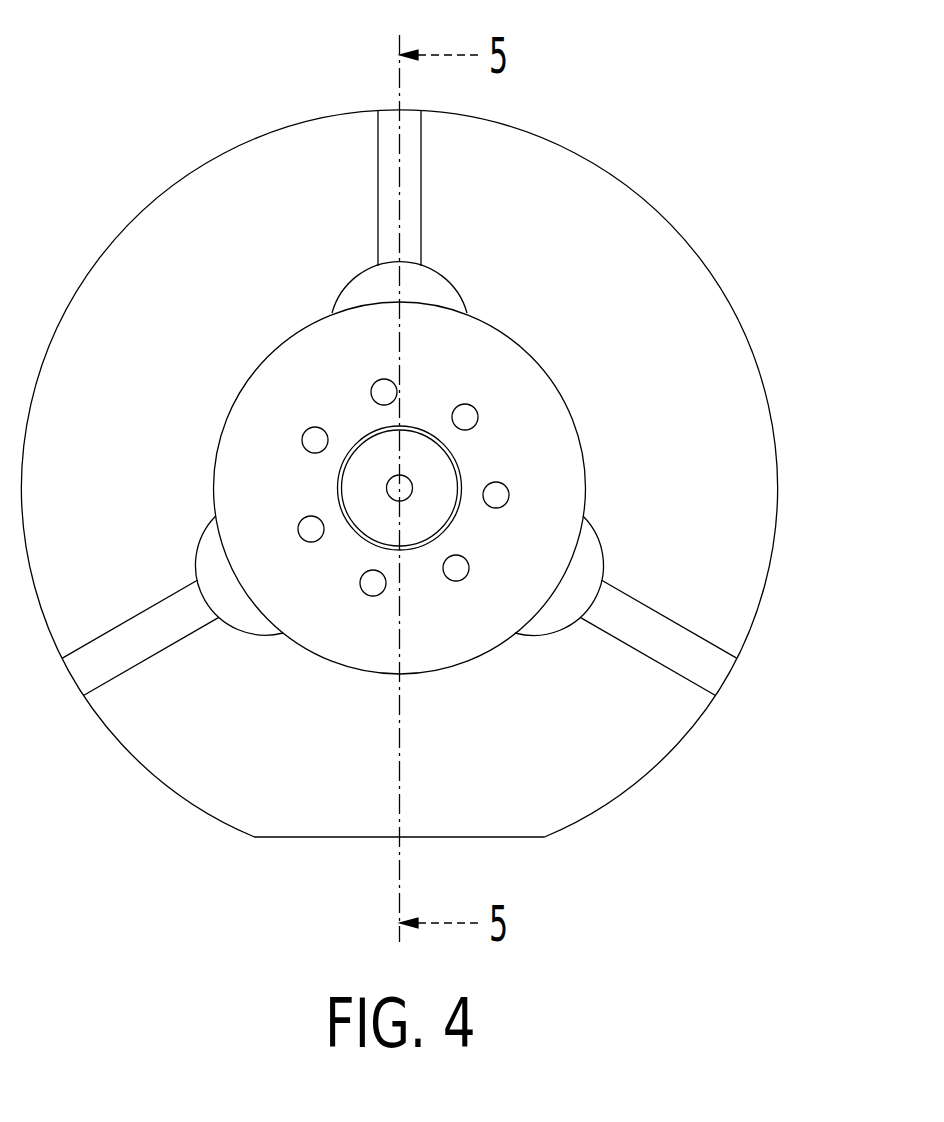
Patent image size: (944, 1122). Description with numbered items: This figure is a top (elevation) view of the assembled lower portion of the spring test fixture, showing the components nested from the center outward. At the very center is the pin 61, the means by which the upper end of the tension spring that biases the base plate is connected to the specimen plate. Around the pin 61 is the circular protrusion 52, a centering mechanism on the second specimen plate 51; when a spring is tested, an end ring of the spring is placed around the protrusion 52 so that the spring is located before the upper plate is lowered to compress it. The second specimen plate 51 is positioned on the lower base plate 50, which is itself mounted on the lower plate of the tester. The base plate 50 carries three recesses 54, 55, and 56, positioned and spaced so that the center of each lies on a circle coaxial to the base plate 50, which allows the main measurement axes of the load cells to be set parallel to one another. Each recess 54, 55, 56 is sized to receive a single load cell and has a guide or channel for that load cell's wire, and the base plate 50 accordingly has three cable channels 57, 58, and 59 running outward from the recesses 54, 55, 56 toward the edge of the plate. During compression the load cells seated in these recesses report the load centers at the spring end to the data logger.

The lower base plate 50 is at (768, 412).
The second specimen plate 51 is at (537, 400).
The circular protrusion 52 is at (430, 472).
The recess 54 is at (210, 550).
The recess 55 is at (370, 289).
The recess 56 is at (587, 563).
The cable channel 57 is at (87, 643).
The cable channel 58 is at (378, 152).
The cable channel 59 is at (702, 637).
The pin 61 is at (400, 476).